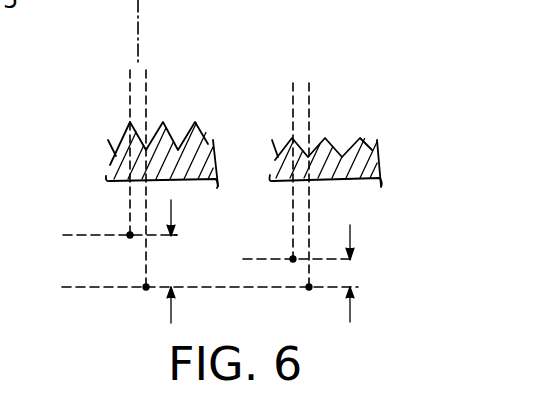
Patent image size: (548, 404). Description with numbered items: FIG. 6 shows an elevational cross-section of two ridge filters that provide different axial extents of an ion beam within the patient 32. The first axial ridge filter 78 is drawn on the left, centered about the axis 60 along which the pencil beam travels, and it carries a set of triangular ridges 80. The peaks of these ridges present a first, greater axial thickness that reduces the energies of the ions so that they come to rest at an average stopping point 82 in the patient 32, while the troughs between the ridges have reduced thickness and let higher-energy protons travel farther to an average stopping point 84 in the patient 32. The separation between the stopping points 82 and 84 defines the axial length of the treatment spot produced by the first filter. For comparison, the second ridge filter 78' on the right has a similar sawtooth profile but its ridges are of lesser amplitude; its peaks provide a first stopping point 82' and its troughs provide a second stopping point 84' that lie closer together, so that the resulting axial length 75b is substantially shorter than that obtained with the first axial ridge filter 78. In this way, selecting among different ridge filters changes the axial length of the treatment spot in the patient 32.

The axis 60 is at (138, 30).
The first axial ridge filter 78 is at (191, 166).
The second ridge filter 78' is at (353, 171).
The triangular ridges 80 is at (202, 142).
The average stopping point 82 is at (114, 215).
The average stopping point 84 is at (210, 270).
The first stopping point 82' is at (299, 233).
The second stopping point 84' is at (282, 305).
The axial length 75b is at (170, 262).
The patient 32 is at (92, 322).